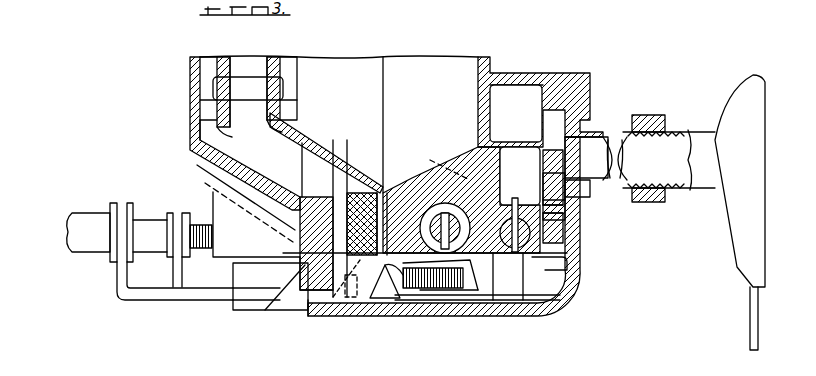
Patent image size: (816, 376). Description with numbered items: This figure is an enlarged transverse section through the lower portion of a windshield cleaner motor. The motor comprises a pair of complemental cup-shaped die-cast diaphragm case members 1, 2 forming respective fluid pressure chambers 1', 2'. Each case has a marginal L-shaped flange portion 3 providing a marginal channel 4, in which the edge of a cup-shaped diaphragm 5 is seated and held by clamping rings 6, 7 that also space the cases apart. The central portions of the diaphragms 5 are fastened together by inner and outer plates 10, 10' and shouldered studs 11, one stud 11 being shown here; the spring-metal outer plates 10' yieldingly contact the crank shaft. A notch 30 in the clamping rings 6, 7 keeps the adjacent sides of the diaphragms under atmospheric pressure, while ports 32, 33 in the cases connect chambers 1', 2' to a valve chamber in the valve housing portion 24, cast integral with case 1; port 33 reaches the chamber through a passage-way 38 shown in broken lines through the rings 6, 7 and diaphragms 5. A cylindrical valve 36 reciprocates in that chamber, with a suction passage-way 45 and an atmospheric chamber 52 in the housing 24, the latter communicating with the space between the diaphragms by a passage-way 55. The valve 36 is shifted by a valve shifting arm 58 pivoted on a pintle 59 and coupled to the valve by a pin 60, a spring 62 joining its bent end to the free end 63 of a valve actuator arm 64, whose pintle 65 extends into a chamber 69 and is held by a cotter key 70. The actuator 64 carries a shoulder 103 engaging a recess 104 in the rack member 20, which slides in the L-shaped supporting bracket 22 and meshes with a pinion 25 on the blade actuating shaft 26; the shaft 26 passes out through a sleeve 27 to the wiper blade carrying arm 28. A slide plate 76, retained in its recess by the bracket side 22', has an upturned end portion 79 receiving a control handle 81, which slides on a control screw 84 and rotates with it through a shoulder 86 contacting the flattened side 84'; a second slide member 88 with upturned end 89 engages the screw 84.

The diaphragm case member 1 is at (540, 89).
The fluid pressure chamber 1' is at (459, 50).
The diaphragm case member 2 is at (216, 133).
The fluid pressure chamber 2' is at (170, 132).
The marginal L-shaped flange portion 3 is at (297, 258).
The marginal channel 4 is at (292, 236).
The diaphragm 5 is at (222, 57).
The clamping ring 6 is at (385, 182).
The clamping ring 7 is at (305, 188).
The inner plate 10 is at (237, 88).
The outer plate 10' is at (249, 131).
The shouldered stud 11 is at (255, 88).
The rack member 20 is at (570, 235).
The supporting bracket 22 is at (576, 301).
The side of supporting bracket 22' is at (289, 328).
The valve housing portion 24 is at (470, 162).
The pinion 25 is at (570, 125).
The blade actuating shaft 26 is at (618, 140).
The cylindrical projection or sleeve 27 is at (615, 195).
The wiper blade carrying arm 28 is at (752, 290).
The aperture or notch 30 is at (338, 198).
The fluid port or passage 32 is at (438, 162).
The fluid port or passage 33 is at (200, 172).
The longitudinally reciprocating valve 36 is at (437, 218).
The fuel passage-way 38 is at (360, 300).
The suction passage-way 45 is at (520, 283).
The intake or atmospheric chamber 52 is at (312, 305).
The passage-way 55 is at (350, 195).
The valve shifting arm 58 is at (448, 270).
The pintle 59 is at (432, 268).
The pin 60 is at (520, 176).
The spring 62 is at (463, 282).
The free end of valve actuator arm 63 is at (386, 290).
The valve actuator arm 64 is at (535, 268).
The pintle 65 is at (530, 276).
The chamber 69 is at (505, 110).
The cotter key 70 is at (520, 219).
The slide plate 76 is at (150, 298).
The outer end portion of slide 79 is at (117, 288).
The control handle 81 is at (80, 250).
The control screw 84 is at (61, 232).
The flattened side of screw 84' is at (177, 221).
The shoulder 86 is at (100, 210).
The second slide member 88 is at (207, 290).
The outer end portion of second slide 89 is at (175, 274).
The lateral projection or shoulder 103 is at (572, 250).
The elongated recess 104 is at (590, 258).